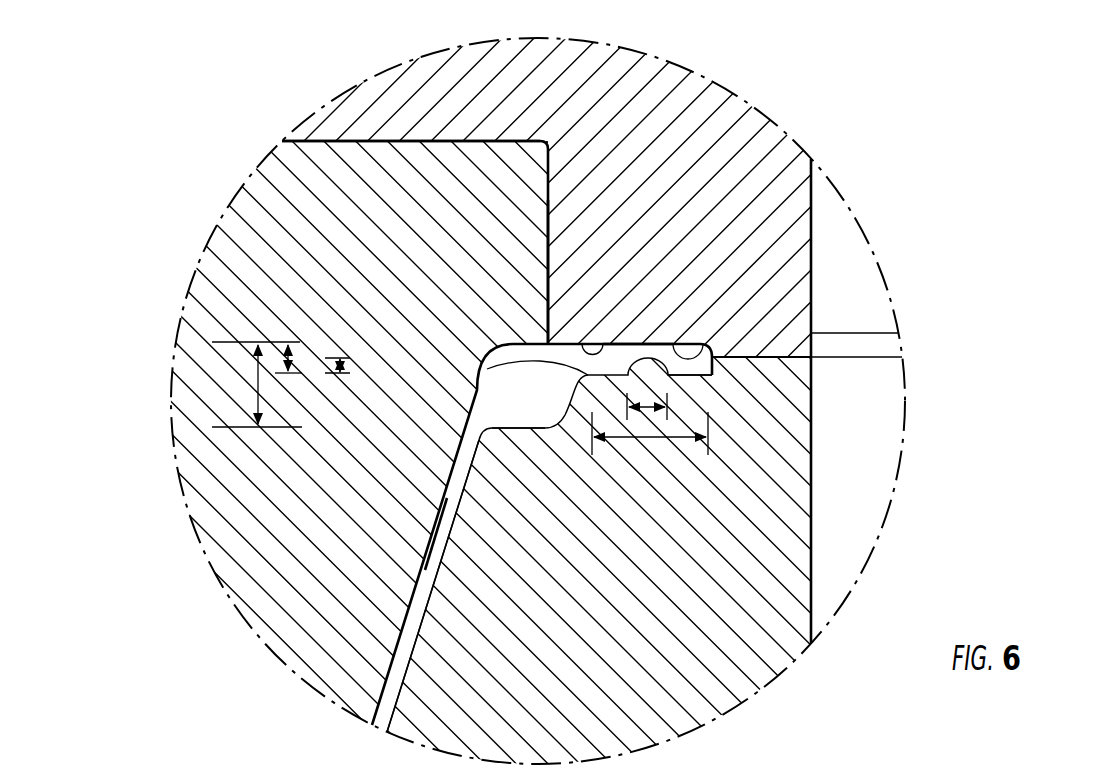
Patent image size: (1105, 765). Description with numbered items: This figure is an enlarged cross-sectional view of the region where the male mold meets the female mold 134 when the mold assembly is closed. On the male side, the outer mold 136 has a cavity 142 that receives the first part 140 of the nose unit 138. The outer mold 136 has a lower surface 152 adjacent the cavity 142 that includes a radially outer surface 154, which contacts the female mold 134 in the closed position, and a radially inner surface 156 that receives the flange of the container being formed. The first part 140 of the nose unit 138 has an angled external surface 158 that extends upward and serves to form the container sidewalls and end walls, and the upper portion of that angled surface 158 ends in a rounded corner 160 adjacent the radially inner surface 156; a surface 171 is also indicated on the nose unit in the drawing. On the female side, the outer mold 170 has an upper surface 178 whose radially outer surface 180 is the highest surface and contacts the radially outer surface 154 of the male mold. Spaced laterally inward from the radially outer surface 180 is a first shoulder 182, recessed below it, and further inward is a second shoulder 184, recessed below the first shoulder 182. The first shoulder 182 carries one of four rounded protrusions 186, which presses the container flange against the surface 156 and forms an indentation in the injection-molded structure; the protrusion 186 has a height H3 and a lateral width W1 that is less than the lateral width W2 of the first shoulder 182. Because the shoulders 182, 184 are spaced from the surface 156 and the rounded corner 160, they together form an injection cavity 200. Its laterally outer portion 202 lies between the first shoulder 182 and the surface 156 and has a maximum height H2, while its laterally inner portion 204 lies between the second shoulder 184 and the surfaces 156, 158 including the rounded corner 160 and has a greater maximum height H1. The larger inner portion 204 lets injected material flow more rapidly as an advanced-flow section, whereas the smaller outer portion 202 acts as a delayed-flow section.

The female mold 134 is at (766, 556).
The outer mold 136 is at (720, 115).
The nose unit 138 is at (356, 165).
The first part 140 is at (482, 157).
The cavity 142 is at (552, 204).
The lower surface 152 is at (692, 368).
The radially outer surface 154 is at (803, 358).
The radially inner surface 156 is at (618, 352).
The angled external surface 158 is at (425, 572).
The rounded corner 160 is at (506, 340).
The outer mold 170 is at (785, 498).
The leg inner surface 171 is at (447, 498).
The upper surface 178 is at (740, 344).
The radially outer surface 180 is at (745, 385).
The first shoulder 182 is at (487, 368).
The second shoulder 184 is at (513, 428).
The protrusion 186 is at (673, 347).
The injection cavity 200 is at (564, 399).
The laterally outer portion 202 is at (604, 343).
The laterally inner portion 204 is at (508, 394).
The maximum height of inner portion H1 is at (257, 378).
The maximum height of outer portion H2 is at (292, 358).
The protrusion height H3 is at (340, 370).
The protrusion lateral width W1 is at (648, 404).
The first shoulder lateral width W2 is at (653, 447).